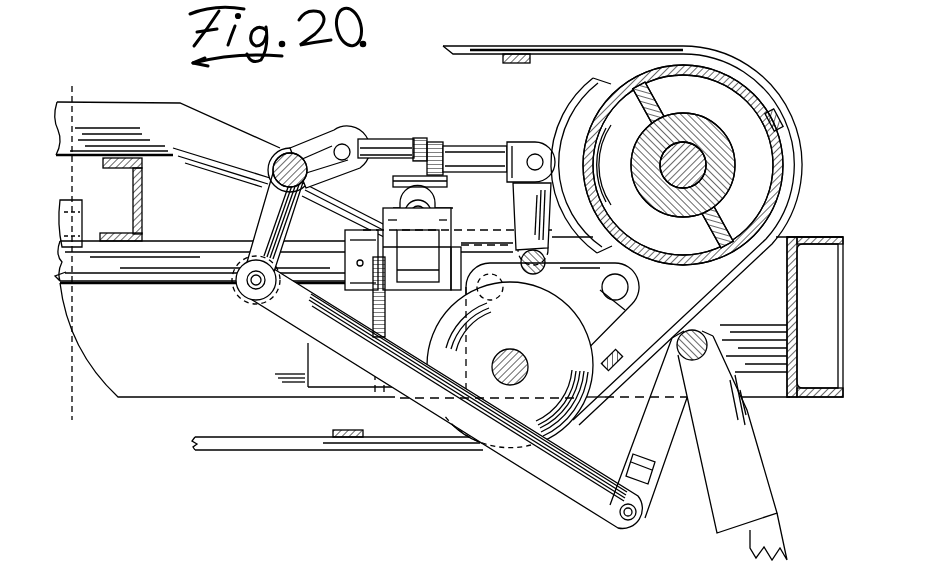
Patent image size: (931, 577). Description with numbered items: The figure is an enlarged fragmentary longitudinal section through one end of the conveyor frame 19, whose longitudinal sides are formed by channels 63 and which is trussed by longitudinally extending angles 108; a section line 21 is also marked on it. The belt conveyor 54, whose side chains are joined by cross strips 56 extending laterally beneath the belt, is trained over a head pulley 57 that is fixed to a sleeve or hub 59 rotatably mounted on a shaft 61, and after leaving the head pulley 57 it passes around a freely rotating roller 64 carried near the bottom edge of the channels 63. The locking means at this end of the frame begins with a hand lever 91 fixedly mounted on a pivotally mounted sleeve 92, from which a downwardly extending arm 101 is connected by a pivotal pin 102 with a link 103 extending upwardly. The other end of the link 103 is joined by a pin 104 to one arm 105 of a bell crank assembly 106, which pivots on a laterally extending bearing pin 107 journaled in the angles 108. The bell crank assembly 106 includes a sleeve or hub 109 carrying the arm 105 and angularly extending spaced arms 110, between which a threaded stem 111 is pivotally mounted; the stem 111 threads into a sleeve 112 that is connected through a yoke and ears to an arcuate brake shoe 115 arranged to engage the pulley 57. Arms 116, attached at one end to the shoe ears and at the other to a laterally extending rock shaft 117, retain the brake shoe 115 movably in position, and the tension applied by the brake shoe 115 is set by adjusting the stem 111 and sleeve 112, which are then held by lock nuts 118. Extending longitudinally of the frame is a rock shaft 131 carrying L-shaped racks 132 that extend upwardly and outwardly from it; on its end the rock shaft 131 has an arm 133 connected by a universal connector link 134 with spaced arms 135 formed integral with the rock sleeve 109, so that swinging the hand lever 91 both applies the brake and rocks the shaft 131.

The conveyor frame 19 is at (146, 402).
The section line 21 is at (90, 80).
The belt conveyor 54 is at (612, 53).
The cross strips 56 is at (522, 64).
The head pulley 57 is at (731, 84).
The sleeve or hub 59 is at (718, 124).
The shaft 61 is at (700, 163).
The channels 63 is at (186, 394).
The rollers 64 is at (567, 425).
The hand lever 91 is at (786, 534).
The pivotally mounted sleeve 92 is at (700, 331).
The downwardly extending arm 101 is at (663, 452).
The pivotal pin 102 is at (632, 519).
The link 103 is at (527, 463).
The pin 104 is at (251, 286).
The arm 105 is at (252, 223).
The bell crank assembly 106 is at (293, 145).
The bearing pin 107 is at (289, 152).
The angles 108 is at (165, 94).
The sleeve or hub 109 is at (265, 150).
The spaced arms 110 is at (334, 142).
The threaded stem 111 is at (377, 140).
The sleeve 112 is at (478, 145).
The arcuate brake shoe 115 is at (598, 78).
The arms 116 is at (523, 208).
The rock shaft 117 is at (547, 271).
The lock nuts 118 is at (438, 145).
The rock shaft 131 is at (163, 268).
The L-shaped racks 132 is at (88, 212).
The arm 133 is at (441, 291).
The universal connector link 134 is at (396, 194).
The spaced arms 135 is at (399, 138).